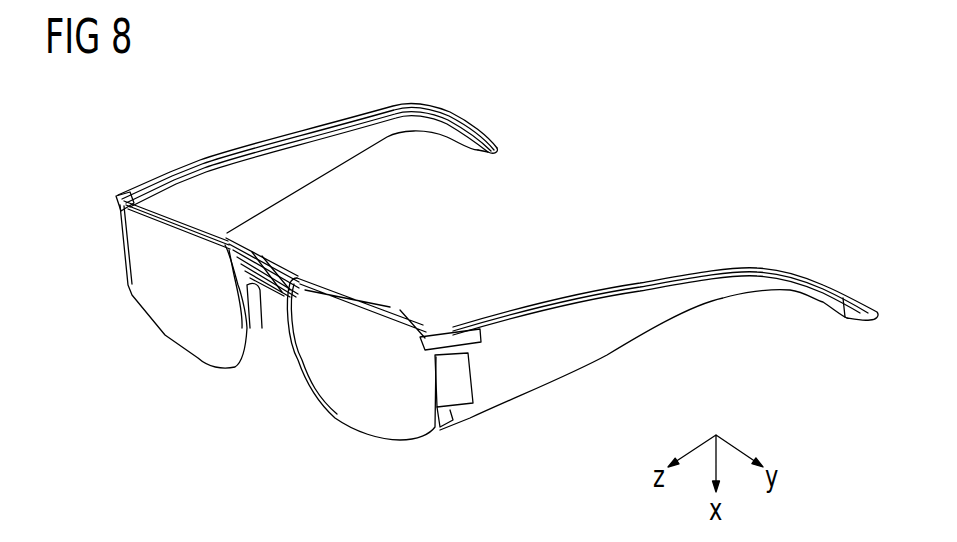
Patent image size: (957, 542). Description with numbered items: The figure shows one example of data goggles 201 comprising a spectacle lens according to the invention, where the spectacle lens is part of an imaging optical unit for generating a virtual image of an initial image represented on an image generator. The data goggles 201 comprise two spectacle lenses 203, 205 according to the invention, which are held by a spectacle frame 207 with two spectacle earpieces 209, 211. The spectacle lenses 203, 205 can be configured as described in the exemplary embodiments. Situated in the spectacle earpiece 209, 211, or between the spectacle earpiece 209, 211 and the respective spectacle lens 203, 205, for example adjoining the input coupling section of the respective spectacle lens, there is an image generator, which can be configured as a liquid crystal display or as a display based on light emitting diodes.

The data goggles 201 is at (540, 116).
The spectacle lens 203 is at (160, 333).
The spectacle lens 205 is at (275, 378).
The spectacle frame 207 is at (288, 265).
The spectacle earpiece 209 is at (253, 163).
The spectacle earpiece 211 is at (530, 318).